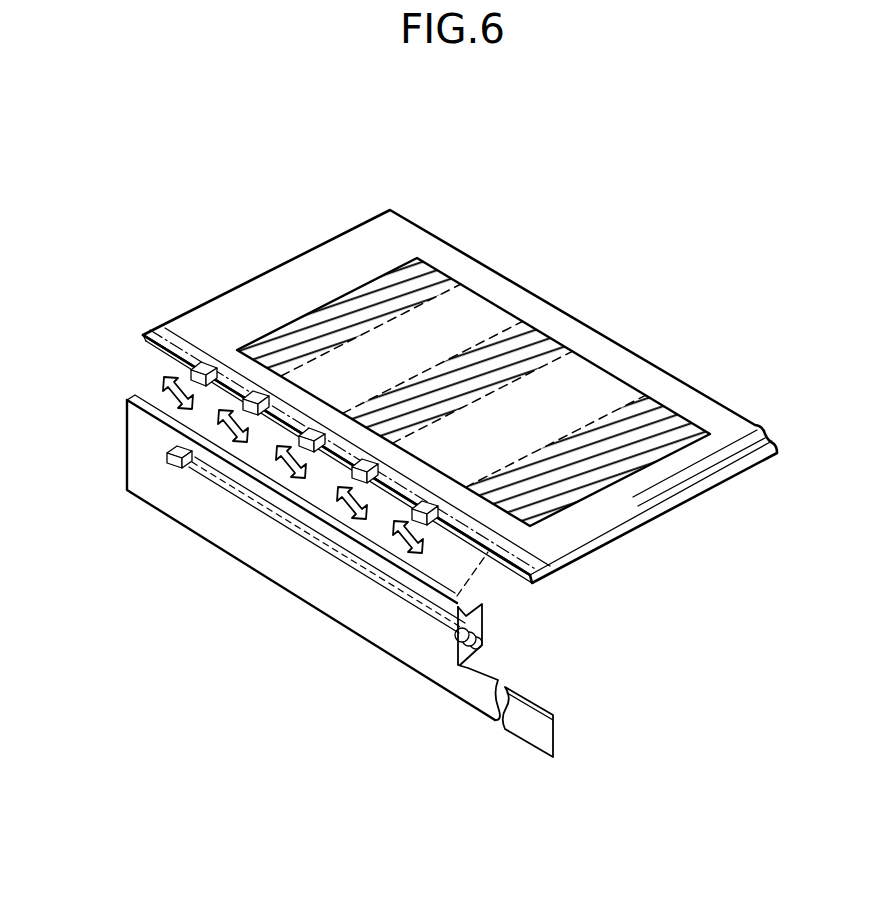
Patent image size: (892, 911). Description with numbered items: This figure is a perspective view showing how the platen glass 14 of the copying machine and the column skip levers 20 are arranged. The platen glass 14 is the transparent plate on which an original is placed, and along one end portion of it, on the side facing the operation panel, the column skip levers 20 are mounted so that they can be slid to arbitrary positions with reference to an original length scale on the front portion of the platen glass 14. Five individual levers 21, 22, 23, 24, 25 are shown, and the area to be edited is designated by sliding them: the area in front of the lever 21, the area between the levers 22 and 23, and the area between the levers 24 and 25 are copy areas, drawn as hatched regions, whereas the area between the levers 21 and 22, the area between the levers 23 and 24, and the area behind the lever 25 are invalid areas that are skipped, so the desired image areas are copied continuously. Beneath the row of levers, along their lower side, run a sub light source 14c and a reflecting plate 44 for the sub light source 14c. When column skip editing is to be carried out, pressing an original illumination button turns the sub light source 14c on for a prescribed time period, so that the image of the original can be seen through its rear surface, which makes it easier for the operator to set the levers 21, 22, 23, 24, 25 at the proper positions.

The platen glass 14 is at (412, 224).
The sub light source 14c is at (485, 640).
The column skip levers 20 is at (400, 743).
The column skip lever 21 is at (424, 521).
The column skip lever 22 is at (364, 478).
The column skip lever 23 is at (310, 446).
The column skip lever 24 is at (252, 404).
The column skip lever 25 is at (203, 380).
The reflecting plate 44 is at (538, 724).